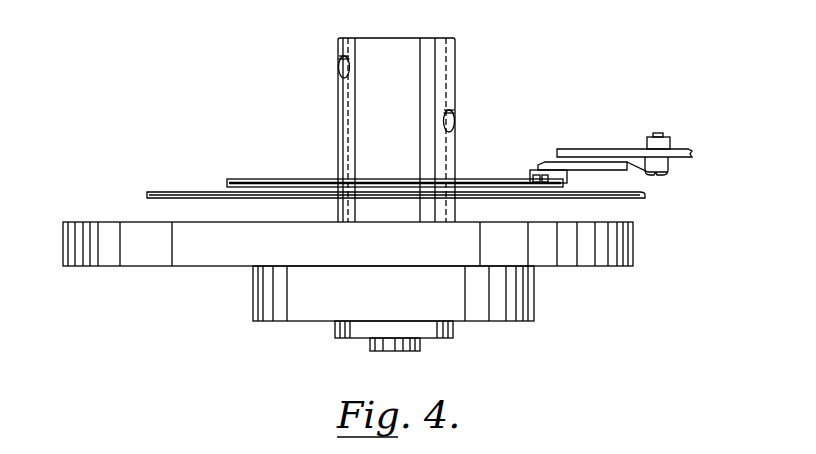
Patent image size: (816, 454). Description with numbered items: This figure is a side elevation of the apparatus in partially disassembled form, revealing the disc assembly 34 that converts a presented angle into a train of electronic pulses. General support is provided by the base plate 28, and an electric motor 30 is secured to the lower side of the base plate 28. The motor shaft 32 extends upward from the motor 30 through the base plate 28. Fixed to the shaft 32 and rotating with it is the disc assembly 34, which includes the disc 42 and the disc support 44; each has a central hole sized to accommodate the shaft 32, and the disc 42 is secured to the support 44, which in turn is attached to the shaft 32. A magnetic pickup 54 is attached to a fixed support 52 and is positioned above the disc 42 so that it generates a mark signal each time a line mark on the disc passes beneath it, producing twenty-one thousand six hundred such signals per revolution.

The base plate 28 is at (114, 222).
The electric motor 30 is at (510, 295).
The motor shaft 32 is at (445, 52).
The disc assembly 34 is at (184, 178).
The disc 42 is at (286, 180).
The disc support 44 is at (628, 193).
The fixed support 52 is at (666, 148).
The magnetic pickup 54 is at (544, 162).